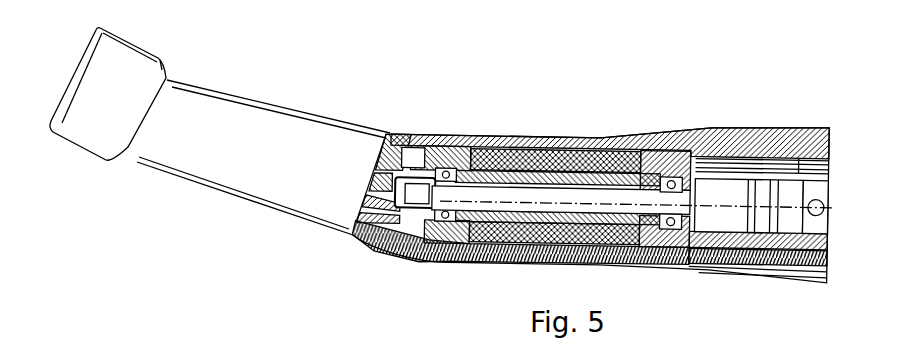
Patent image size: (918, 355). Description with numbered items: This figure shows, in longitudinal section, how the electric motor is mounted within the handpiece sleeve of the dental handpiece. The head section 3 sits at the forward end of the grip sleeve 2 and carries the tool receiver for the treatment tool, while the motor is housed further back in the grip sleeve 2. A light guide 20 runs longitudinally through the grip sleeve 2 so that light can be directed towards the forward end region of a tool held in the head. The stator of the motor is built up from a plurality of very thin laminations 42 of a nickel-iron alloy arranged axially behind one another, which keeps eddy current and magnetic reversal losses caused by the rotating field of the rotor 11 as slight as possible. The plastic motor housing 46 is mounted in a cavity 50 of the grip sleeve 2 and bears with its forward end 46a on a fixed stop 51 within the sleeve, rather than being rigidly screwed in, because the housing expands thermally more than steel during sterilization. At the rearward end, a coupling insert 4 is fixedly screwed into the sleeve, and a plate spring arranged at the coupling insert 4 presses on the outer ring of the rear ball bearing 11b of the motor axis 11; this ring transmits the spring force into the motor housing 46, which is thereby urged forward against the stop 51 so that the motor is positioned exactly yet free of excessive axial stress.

The grip sleeve 2 is at (408, 272).
The head section 3 is at (151, 55).
The coupling insert 4 is at (717, 243).
The rotor 11 is at (563, 189).
The rear ball bearing 11b is at (666, 172).
The light guide 20 is at (440, 262).
The laminations 42 is at (523, 148).
The motor housing 46 is at (453, 146).
The forward end of motor housing 46a is at (410, 147).
The cavity 50 is at (620, 140).
The fixed stop 51 is at (380, 158).